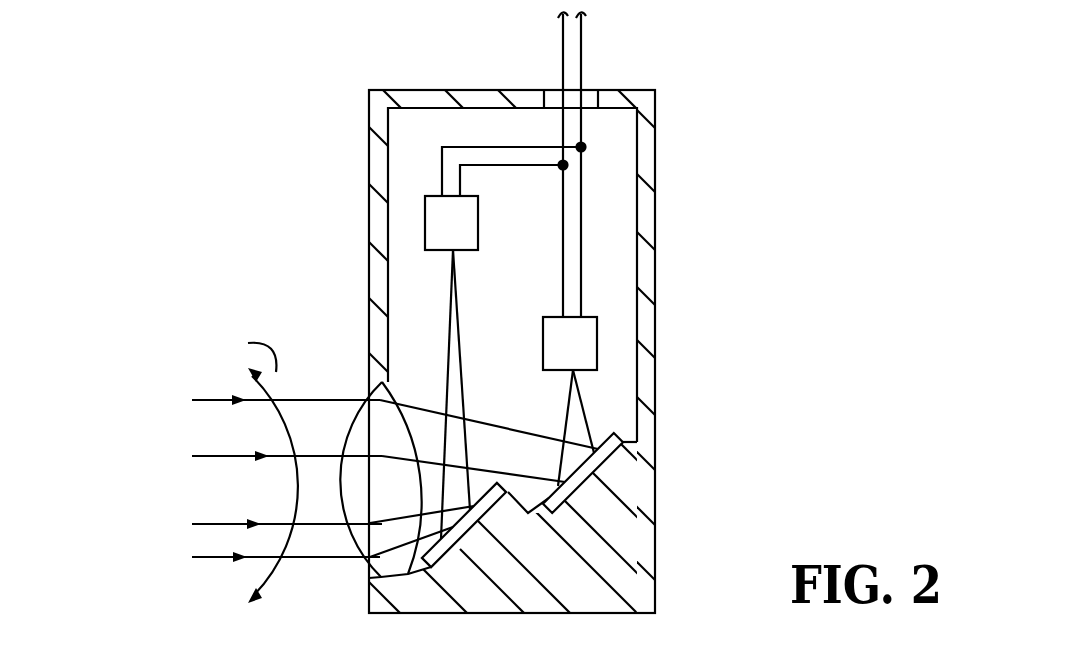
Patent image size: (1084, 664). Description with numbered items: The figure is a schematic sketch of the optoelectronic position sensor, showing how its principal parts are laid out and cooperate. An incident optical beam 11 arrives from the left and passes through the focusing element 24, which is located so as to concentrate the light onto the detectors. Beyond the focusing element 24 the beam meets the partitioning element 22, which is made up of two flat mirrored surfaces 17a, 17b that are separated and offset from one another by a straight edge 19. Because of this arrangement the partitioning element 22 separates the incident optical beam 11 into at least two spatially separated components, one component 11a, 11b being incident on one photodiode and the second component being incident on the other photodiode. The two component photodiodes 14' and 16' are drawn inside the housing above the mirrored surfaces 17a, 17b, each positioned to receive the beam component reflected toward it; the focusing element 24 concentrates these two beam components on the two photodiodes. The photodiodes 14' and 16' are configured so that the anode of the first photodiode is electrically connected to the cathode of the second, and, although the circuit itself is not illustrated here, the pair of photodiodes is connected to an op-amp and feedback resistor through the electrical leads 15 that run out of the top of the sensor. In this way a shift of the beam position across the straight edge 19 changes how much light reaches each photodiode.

The incident optical beam 11 is at (180, 383).
The optical beam component 11a is at (420, 420).
The optical beam component 11b is at (425, 528).
The component photodiode 14' is at (646, 329).
The electrical leads 15 is at (555, 160).
The component photodiode 16' is at (390, 219).
The flat mirrored surface 17a is at (560, 472).
The flat mirrored surface 17b is at (477, 490).
The straight edge 19 is at (514, 505).
The partitioning element 22 is at (671, 526).
The focusing element 24 is at (363, 563).